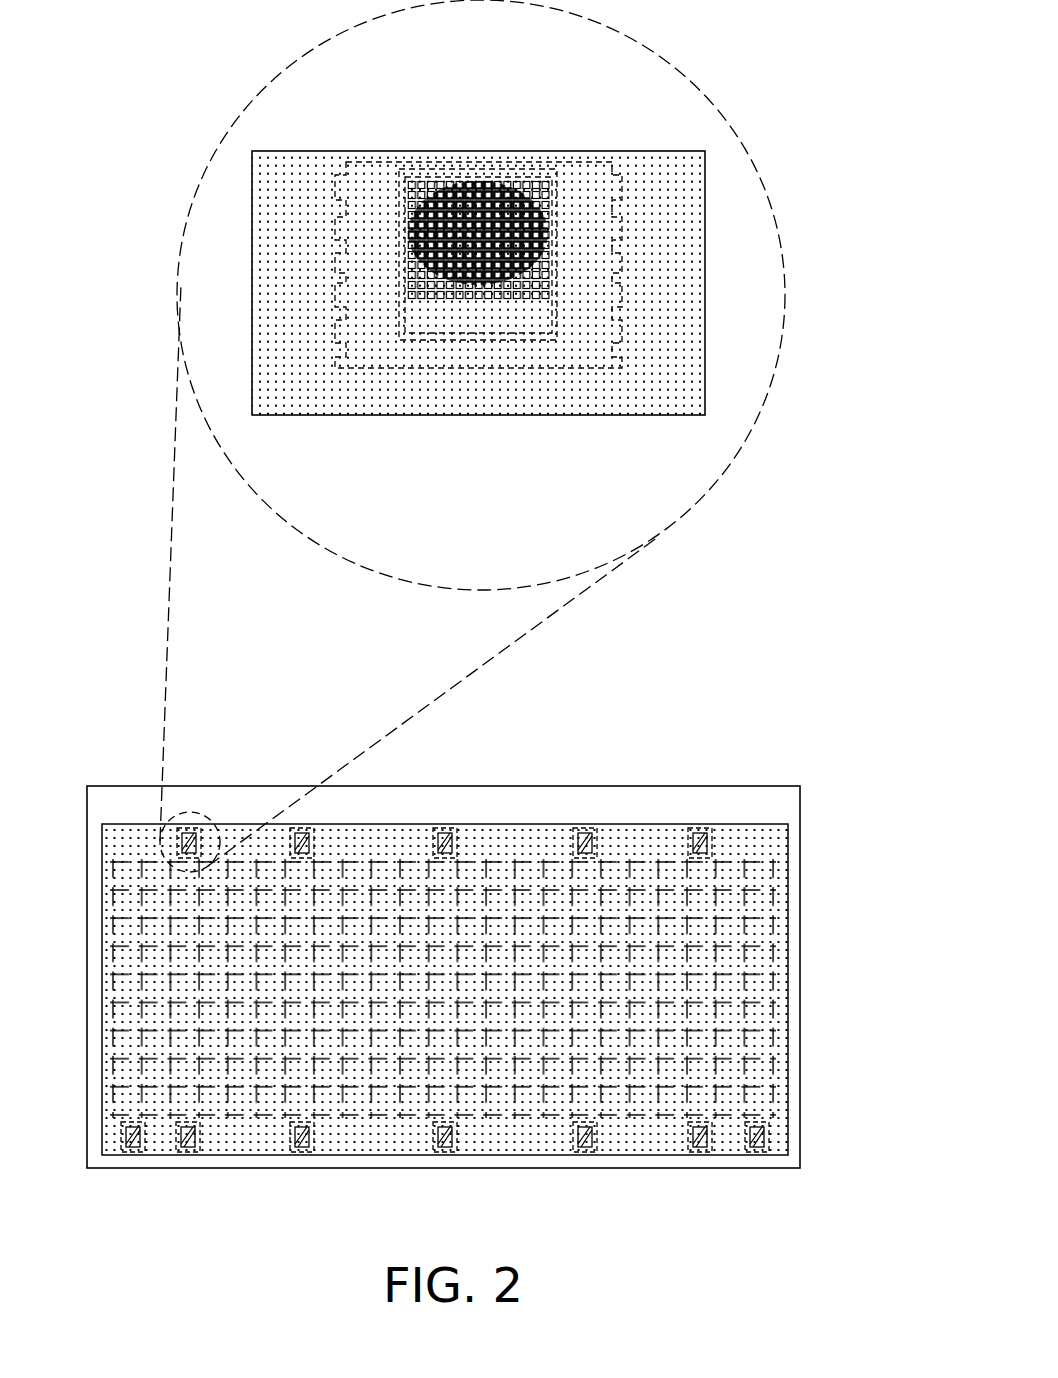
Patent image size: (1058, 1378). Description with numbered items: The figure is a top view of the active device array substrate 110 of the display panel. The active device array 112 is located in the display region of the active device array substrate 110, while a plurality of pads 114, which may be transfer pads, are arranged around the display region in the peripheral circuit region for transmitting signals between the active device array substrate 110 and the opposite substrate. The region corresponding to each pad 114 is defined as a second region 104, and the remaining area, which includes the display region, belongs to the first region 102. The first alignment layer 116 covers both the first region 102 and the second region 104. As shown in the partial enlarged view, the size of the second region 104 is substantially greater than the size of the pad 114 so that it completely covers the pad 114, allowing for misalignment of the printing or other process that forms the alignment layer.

The first region 102 is at (510, 843).
The second region 104 is at (385, 160).
The active device array substrate 110 is at (843, 1223).
The active device array 112 is at (768, 860).
The pad 114 is at (553, 240).
The first alignment layer 116 is at (763, 842).